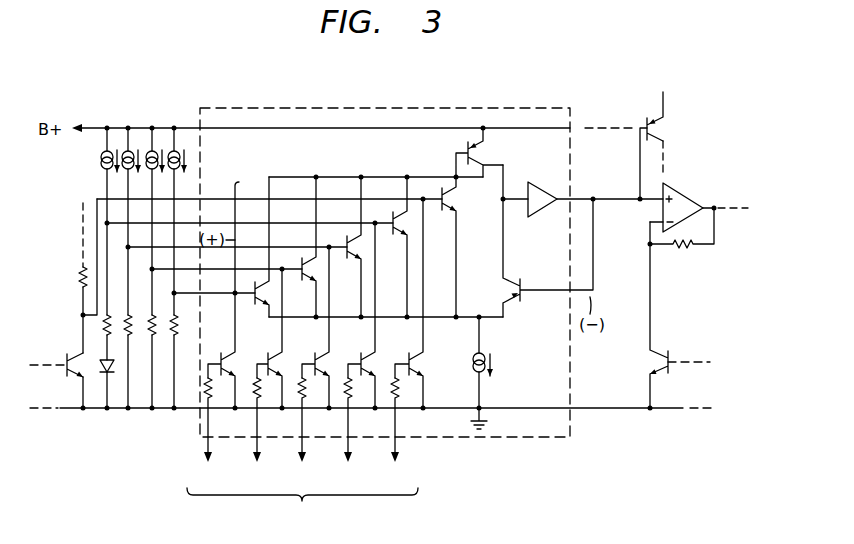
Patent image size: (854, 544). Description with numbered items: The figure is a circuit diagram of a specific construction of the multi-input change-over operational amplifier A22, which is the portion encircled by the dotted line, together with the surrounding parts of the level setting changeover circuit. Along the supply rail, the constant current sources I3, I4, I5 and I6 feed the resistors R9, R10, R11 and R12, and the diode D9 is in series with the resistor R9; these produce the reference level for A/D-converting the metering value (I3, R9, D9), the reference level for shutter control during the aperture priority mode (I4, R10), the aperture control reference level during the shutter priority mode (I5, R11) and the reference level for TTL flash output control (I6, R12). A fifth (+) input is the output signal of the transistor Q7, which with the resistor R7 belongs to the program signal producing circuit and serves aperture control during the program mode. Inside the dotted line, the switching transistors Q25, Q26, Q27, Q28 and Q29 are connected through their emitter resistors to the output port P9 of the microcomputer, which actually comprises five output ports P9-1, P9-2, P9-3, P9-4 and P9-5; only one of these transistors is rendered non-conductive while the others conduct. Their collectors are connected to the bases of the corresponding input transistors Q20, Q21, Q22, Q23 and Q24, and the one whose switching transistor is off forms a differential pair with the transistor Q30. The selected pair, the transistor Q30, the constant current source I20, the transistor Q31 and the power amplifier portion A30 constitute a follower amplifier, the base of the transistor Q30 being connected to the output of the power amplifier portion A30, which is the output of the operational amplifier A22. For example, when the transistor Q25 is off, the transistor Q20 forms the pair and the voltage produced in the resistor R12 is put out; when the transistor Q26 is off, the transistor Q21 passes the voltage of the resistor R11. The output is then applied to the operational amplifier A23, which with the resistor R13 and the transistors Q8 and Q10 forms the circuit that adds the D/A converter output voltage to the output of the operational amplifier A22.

The constant current source I3 is at (102, 161).
The constant current source I4 is at (124, 162).
The constant current source I5 is at (148, 162).
The constant current source I6 is at (171, 162).
The constant current source I20 is at (472, 362).
The resistor R7 is at (80, 277).
The resistor R9 is at (111, 323).
The resistor R10 is at (132, 323).
The resistor R11 is at (156, 323).
The resistor R12 is at (178, 325).
The resistor R13 is at (688, 250).
The diode D9 is at (105, 367).
The transistor Q7 is at (76, 384).
The transistor Q8 is at (670, 354).
The transistor Q10 is at (660, 133).
The transistor Q20 is at (258, 306).
The transistor Q21 is at (316, 290).
The transistor Q22 is at (360, 263).
The transistor Q23 is at (402, 232).
The transistor Q24 is at (444, 222).
The transistor Q25 is at (232, 336).
The transistor Q26 is at (284, 350).
The transistor Q27 is at (330, 339).
The transistor Q28 is at (376, 354).
The transistor Q29 is at (423, 354).
The transistor Q30 is at (512, 304).
The transistor Q31 is at (484, 163).
The multi-input change-over operational amplifier A22 is at (358, 108).
The power amplifier portion A30 is at (546, 212).
The operational amplifier A23 is at (708, 193).
The output port P9-1 is at (208, 434).
The output port P9-2 is at (258, 434).
The output port P9-3 is at (306, 434).
The output port P9-4 is at (353, 434).
The output port P9-5 is at (398, 434).
The output port P9 is at (302, 508).